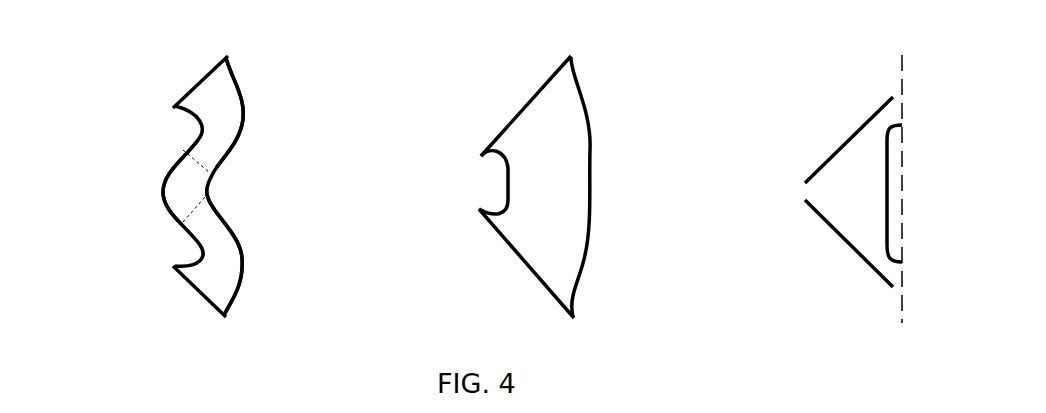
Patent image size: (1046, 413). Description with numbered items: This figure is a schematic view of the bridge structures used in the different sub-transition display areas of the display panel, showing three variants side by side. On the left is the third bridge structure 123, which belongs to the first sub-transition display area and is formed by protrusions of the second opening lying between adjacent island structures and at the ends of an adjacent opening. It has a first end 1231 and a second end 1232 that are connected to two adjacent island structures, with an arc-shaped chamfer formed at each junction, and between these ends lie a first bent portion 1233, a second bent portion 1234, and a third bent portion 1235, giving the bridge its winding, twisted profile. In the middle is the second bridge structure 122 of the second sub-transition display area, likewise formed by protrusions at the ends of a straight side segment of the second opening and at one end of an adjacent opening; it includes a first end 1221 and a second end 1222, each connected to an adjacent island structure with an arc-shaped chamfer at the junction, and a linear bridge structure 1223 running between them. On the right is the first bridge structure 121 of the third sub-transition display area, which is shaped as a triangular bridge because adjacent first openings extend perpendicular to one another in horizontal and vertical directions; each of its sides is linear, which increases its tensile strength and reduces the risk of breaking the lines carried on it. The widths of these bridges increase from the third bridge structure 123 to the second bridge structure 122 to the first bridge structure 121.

The first bridge structure 121 is at (865, 140).
The second bridge structure 122 is at (580, 62).
The third bridge structure 123 is at (238, 65).
The first end 1221 is at (545, 123).
The second end 1222 is at (537, 240).
The linear bridge structure 1223 is at (573, 187).
The first end 1231 is at (203, 92).
The second end 1232 is at (208, 272).
The first bent portion 1233 is at (224, 118).
The second bent portion 1234 is at (176, 182).
The third bent portion 1235 is at (229, 252).